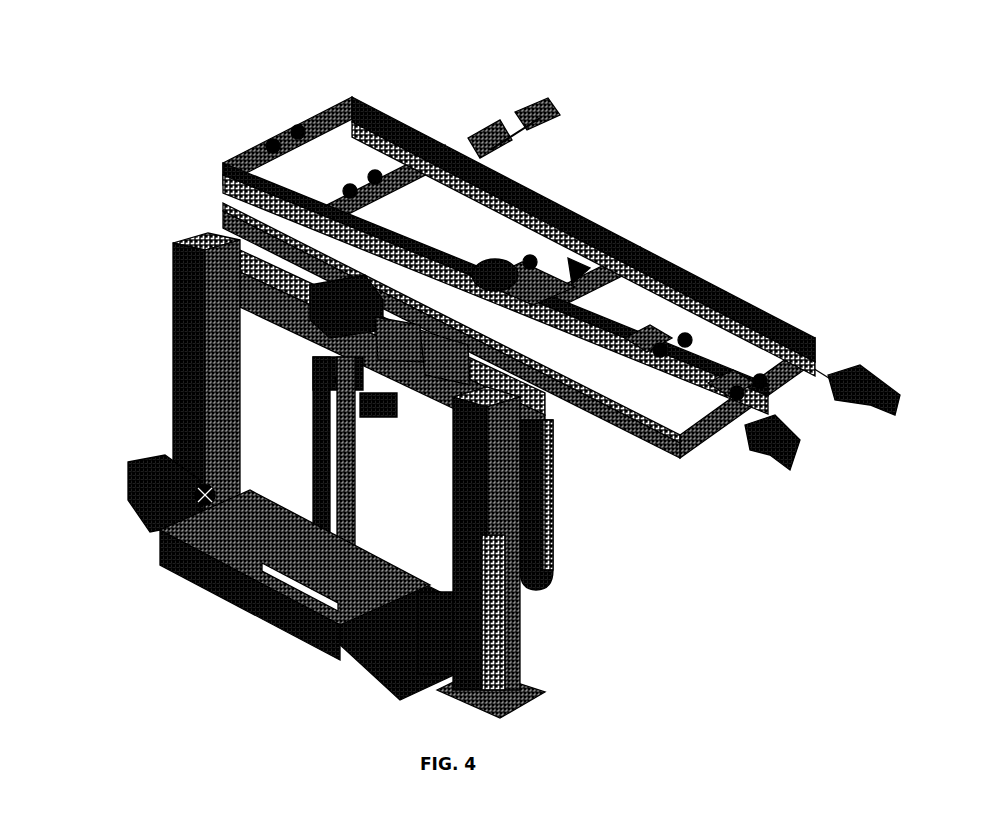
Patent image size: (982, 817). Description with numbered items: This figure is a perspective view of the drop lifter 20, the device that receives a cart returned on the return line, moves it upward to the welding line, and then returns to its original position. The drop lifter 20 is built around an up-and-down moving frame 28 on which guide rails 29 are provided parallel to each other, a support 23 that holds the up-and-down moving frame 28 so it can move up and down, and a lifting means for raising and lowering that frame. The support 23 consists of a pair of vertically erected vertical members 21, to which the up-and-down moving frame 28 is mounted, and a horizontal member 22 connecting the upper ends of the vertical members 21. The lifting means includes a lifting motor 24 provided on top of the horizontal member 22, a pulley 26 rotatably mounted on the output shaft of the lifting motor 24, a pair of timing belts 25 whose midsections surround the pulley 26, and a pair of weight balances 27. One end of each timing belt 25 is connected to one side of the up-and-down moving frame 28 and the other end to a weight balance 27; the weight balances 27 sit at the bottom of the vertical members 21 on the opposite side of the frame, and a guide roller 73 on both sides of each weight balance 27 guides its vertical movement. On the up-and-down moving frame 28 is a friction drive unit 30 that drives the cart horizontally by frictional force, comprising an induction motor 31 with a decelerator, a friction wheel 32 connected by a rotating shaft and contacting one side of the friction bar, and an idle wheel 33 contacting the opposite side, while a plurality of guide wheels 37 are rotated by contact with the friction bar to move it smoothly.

The drop lifter 20 is at (172, 205).
The vertical members 21 is at (187, 350).
The horizontal member 22 is at (216, 283).
The support 23 is at (52, 292).
The lifting motor 24 is at (545, 447).
The timing belts 25 is at (273, 562).
The pulley 26 is at (304, 327).
The weight balances 27 is at (385, 563).
The up-and-down moving frame 28 is at (652, 450).
The guide rails 29 is at (770, 297).
The friction drive unit 30 is at (632, 243).
The induction motor 31 is at (682, 262).
The friction wheel 32 is at (505, 262).
The idle wheel 33 is at (590, 218).
The guide wheels 37 is at (294, 128).
The guide roller 73 is at (462, 622).